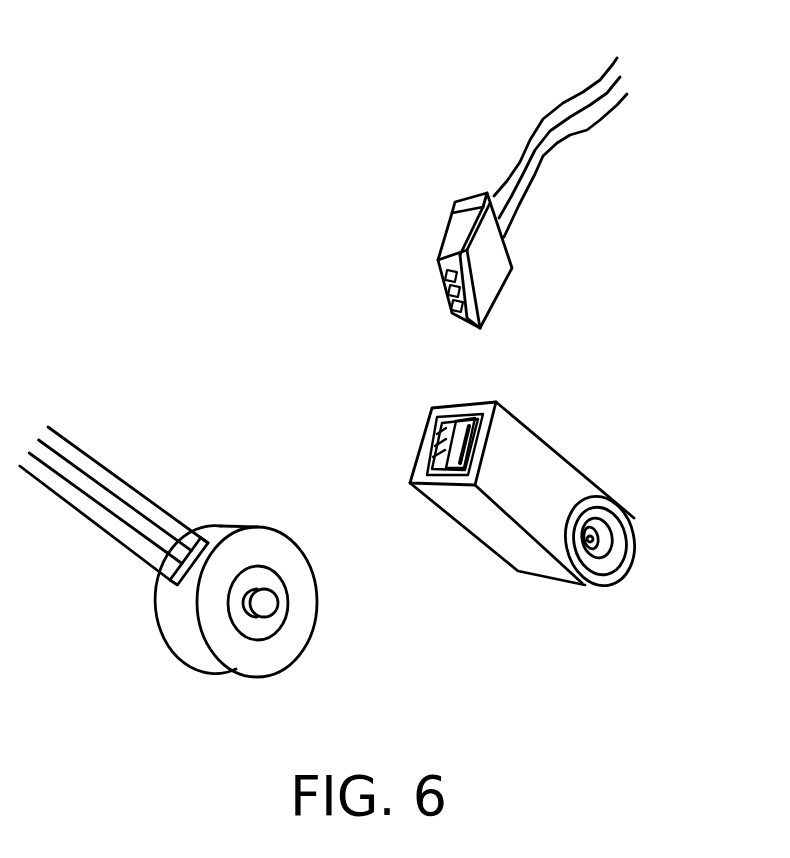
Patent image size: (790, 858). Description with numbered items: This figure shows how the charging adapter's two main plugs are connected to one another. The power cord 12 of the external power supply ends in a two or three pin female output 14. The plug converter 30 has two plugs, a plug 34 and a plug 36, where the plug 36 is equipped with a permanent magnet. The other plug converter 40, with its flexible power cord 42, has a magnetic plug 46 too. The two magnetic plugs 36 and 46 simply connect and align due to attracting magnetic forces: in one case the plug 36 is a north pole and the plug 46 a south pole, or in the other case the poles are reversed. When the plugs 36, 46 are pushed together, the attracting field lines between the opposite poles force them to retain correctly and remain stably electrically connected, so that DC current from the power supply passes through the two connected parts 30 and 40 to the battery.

The power cord 12 is at (560, 152).
The female output 14 is at (408, 240).
The plug converter 30 is at (513, 472).
The plug 34 is at (393, 430).
The magnetic plug 36 is at (640, 541).
The plug converter 40 is at (180, 530).
The flexible power cord 42 is at (114, 525).
The magnetic plug 46 is at (292, 656).